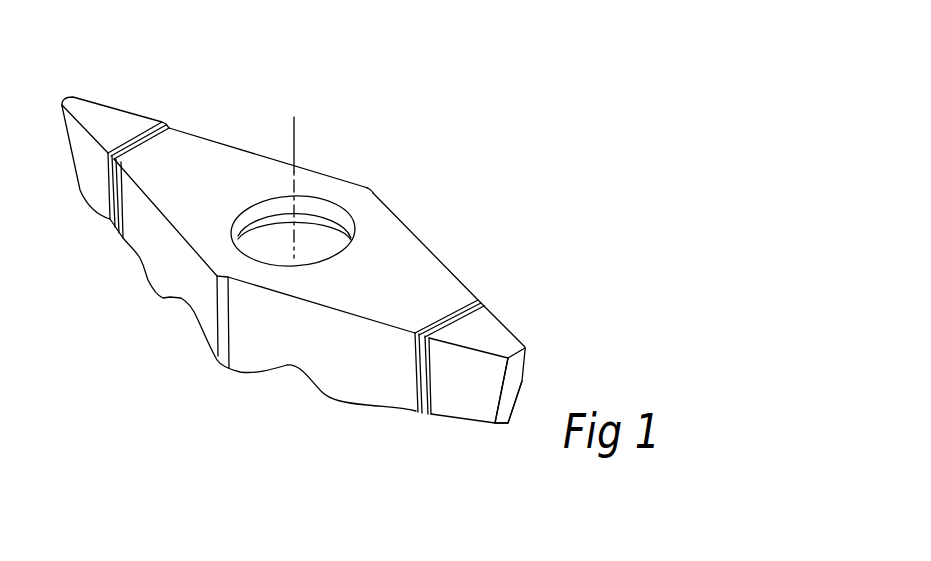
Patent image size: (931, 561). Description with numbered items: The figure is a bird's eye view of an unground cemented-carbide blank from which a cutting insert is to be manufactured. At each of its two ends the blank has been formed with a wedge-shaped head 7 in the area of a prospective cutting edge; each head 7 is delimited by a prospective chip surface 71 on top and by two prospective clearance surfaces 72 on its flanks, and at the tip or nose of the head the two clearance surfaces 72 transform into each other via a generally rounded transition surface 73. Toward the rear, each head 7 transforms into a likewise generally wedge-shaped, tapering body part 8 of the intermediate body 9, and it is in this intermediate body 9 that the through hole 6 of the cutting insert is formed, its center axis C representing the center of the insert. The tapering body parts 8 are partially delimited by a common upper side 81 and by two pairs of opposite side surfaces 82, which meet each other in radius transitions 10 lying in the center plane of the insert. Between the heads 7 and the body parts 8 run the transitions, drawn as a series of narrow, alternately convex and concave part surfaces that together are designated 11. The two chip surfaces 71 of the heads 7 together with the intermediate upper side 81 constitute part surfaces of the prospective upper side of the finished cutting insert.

The through hole 6 is at (312, 242).
The wedge-shaped head 7 is at (97, 77).
The wedge-shaped body part 8 is at (231, 157).
The intermediate body 9 is at (383, 167).
The radius transition 10 is at (223, 341).
The part surfaces 11 is at (143, 135).
The chip surface 71 is at (124, 135).
The clearance surface 72 is at (106, 175).
The transition surface 73 is at (517, 365).
The upper side 81 is at (392, 278).
The side surfaces 82 is at (192, 284).
The center axis C is at (296, 132).